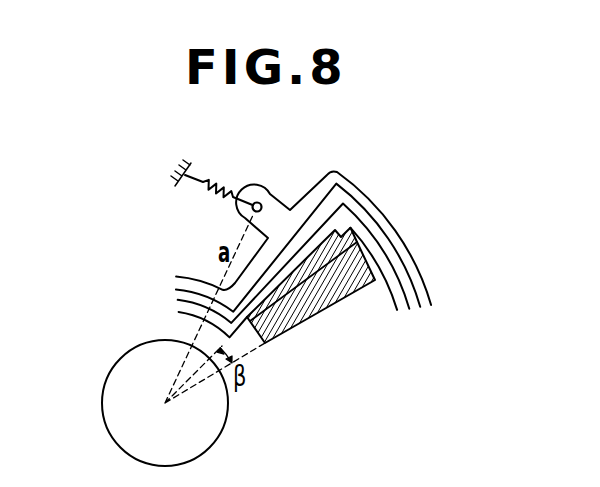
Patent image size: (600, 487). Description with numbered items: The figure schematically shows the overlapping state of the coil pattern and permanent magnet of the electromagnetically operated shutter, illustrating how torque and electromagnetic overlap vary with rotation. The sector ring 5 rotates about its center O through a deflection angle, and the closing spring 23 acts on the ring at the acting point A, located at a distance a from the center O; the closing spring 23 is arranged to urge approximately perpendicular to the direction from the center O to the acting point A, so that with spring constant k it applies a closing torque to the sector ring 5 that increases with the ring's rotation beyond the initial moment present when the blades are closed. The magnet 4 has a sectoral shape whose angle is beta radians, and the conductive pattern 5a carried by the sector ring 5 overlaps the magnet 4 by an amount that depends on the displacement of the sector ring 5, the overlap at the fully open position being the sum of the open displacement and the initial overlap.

The magnet 4 is at (313, 295).
The sector ring 5 is at (424, 292).
The conductive pattern 5a is at (382, 227).
The closing spring 23 is at (225, 187).
The acting point A is at (265, 217).
The center O is at (183, 339).